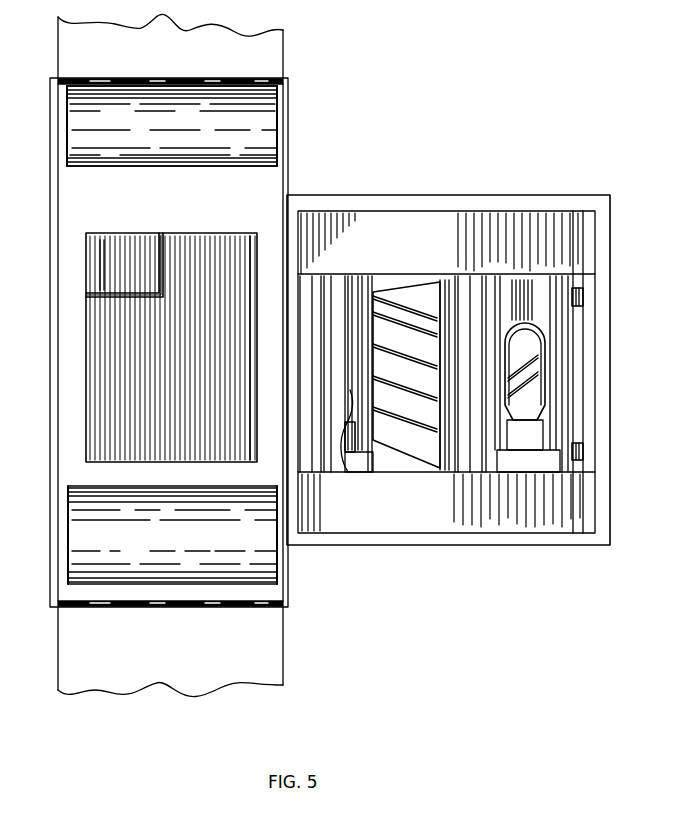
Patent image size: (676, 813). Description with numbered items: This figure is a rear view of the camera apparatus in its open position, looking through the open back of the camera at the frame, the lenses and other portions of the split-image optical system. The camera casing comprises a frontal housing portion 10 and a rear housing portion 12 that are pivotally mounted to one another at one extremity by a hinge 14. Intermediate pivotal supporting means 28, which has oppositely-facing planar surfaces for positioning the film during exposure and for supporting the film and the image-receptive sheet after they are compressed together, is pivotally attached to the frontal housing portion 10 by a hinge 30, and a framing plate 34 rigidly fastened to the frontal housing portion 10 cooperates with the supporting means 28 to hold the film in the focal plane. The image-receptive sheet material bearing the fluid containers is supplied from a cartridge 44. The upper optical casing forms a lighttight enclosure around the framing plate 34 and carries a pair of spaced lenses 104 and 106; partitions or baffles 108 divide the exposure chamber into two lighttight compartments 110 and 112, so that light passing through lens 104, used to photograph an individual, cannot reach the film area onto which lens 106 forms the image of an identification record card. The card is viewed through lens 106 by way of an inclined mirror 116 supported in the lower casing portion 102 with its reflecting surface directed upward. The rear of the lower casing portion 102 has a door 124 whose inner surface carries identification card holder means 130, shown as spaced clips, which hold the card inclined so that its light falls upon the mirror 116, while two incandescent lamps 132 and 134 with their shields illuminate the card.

The frontal housing portion 10 is at (50, 570).
The rear housing portion 12 is at (66, 652).
The hinge 14 is at (64, 607).
The intermediate pivotal supporting means 28 is at (78, 38).
The hinge 30 is at (85, 80).
The framing plate 34 is at (76, 362).
The cartridge 44 is at (80, 518).
The lower casing portion 102 is at (453, 207).
The lens 104 is at (134, 270).
The lens 106 is at (186, 358).
The partitions or baffles 108 is at (163, 255).
The compartment 110 is at (147, 245).
The compartment 112 is at (240, 440).
The inclined mirror 116 is at (403, 320).
The door 124 is at (590, 450).
The identification card holder 130 is at (583, 296).
The incandescent lamp 132 is at (340, 476).
The incandescent lamp 134 is at (540, 380).